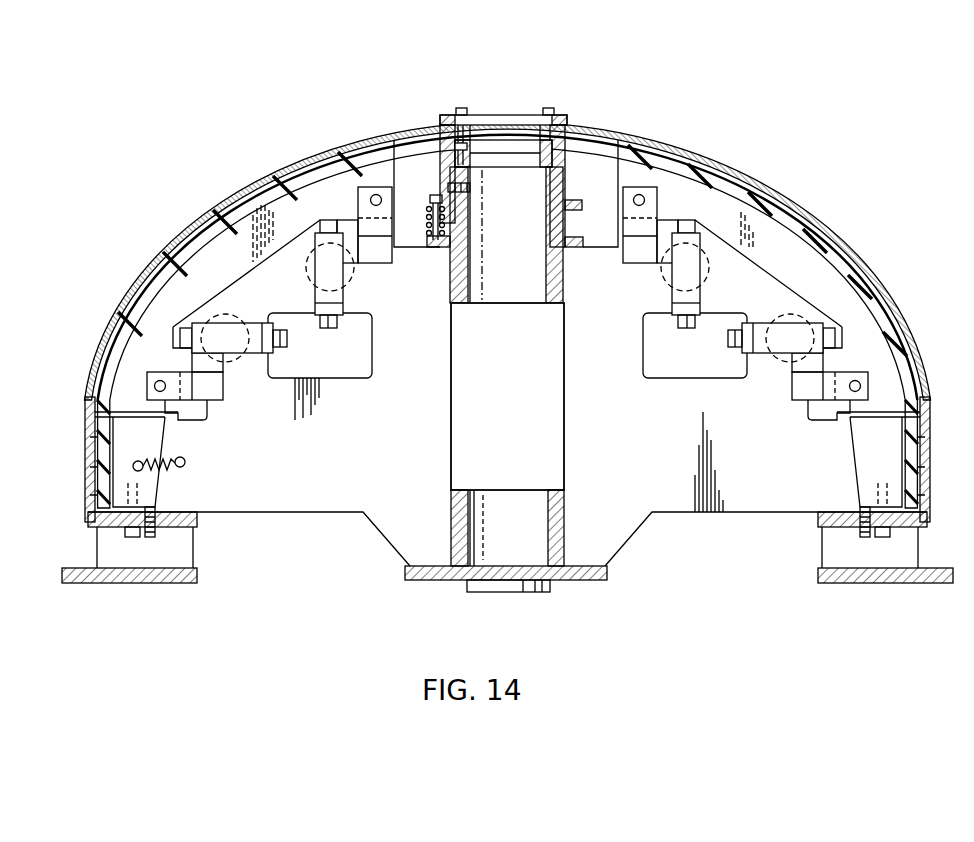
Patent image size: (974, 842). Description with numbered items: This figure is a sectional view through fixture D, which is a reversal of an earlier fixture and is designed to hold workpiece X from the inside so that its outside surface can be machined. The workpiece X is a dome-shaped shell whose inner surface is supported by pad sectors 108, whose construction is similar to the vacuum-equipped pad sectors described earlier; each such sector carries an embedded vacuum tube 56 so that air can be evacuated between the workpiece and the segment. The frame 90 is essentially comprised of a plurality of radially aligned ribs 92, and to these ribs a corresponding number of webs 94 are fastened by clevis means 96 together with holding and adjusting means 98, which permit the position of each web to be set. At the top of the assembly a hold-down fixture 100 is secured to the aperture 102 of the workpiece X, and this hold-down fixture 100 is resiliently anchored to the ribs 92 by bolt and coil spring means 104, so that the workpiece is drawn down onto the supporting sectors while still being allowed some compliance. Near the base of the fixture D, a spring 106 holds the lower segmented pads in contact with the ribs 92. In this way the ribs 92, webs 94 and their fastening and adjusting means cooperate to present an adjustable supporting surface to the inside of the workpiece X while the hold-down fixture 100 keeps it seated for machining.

The vacuum tube 56 is at (101, 356).
The frame 90 is at (603, 582).
The ribs 92 is at (292, 493).
The webs 94 is at (200, 275).
The clevis means 96 is at (154, 372).
The holding and adjusting means 98 is at (232, 330).
The hold-down fixture 100 is at (534, 112).
The aperture 102 is at (462, 132).
The bolt and coil spring means 104 is at (431, 218).
The spring 106 is at (162, 458).
The pad sectors 108 is at (217, 213).
The workpiece X is at (852, 246).
The fixture D is at (351, 557).